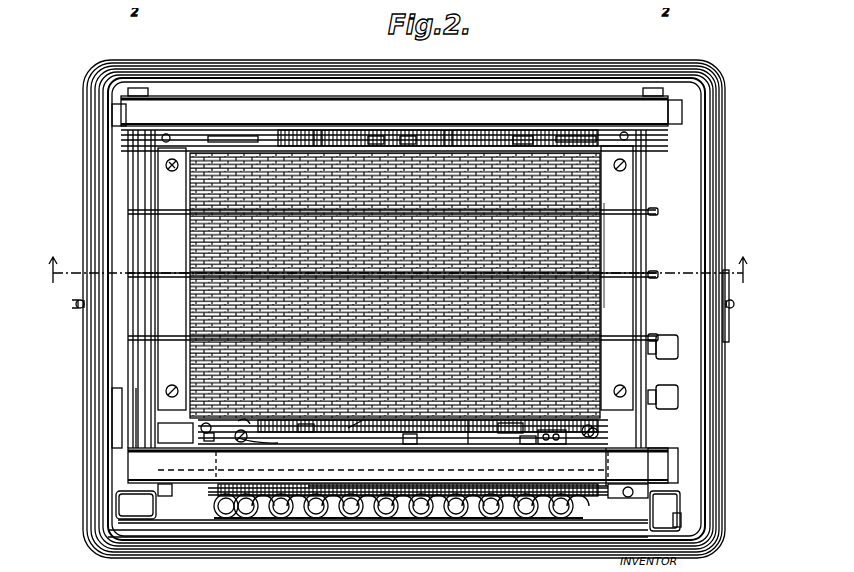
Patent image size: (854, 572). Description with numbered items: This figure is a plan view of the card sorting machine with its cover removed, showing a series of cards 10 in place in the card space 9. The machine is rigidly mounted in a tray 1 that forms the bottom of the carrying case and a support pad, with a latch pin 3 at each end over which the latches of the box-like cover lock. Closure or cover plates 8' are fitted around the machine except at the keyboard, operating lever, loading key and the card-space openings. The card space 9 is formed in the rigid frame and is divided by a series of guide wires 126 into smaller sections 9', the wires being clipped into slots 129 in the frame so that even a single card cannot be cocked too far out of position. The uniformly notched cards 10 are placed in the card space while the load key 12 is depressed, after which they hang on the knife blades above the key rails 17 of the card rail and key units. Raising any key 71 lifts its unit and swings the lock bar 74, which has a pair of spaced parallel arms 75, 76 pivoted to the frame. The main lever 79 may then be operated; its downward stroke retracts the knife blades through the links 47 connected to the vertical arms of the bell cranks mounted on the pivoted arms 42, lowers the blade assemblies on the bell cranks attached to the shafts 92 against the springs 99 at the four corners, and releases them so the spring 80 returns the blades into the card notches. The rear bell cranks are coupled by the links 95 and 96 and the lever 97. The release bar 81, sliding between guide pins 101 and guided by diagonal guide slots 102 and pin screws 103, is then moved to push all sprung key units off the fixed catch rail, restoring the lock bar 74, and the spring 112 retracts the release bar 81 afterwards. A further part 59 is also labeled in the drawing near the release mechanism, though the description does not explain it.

The tray 1 is at (80, 140).
The latch pin 3 is at (740, 312).
The cover plates 8' is at (397, 82).
The card space 9 is at (362, 271).
The smaller sections 9' is at (615, 255).
The cards 10 is at (560, 298).
The load key 12 is at (135, 512).
The key rails 17 is at (318, 128).
The arm 42 is at (232, 132).
The links 47 is at (462, 418).
The link 59 is at (351, 434).
The key 71 is at (413, 504).
The lock bar 74 is at (356, 448).
The arm 75 is at (594, 452).
The arm 76 is at (206, 452).
The main lever 79 is at (660, 497).
The spring 80 is at (300, 412).
The release bar 81 is at (402, 428).
The shafts 92 is at (128, 421).
The link 95 is at (514, 128).
The link 96 is at (368, 128).
The lever 97 is at (400, 128).
The springs 99 is at (389, 446).
The guide pins 101 is at (520, 436).
The diagonal guide slots 102 is at (233, 434).
The pin screws 103 is at (252, 432).
The spring 112 is at (508, 412).
The guide wires 126 is at (645, 265).
The slots 129 is at (145, 264).